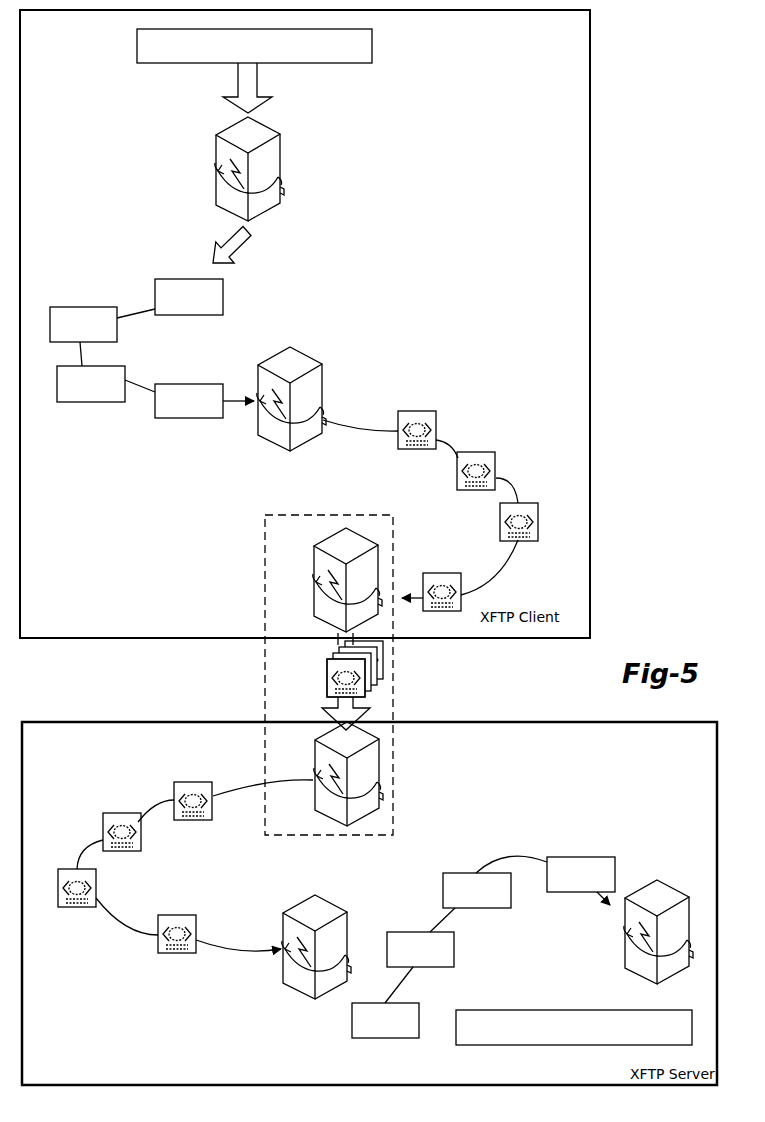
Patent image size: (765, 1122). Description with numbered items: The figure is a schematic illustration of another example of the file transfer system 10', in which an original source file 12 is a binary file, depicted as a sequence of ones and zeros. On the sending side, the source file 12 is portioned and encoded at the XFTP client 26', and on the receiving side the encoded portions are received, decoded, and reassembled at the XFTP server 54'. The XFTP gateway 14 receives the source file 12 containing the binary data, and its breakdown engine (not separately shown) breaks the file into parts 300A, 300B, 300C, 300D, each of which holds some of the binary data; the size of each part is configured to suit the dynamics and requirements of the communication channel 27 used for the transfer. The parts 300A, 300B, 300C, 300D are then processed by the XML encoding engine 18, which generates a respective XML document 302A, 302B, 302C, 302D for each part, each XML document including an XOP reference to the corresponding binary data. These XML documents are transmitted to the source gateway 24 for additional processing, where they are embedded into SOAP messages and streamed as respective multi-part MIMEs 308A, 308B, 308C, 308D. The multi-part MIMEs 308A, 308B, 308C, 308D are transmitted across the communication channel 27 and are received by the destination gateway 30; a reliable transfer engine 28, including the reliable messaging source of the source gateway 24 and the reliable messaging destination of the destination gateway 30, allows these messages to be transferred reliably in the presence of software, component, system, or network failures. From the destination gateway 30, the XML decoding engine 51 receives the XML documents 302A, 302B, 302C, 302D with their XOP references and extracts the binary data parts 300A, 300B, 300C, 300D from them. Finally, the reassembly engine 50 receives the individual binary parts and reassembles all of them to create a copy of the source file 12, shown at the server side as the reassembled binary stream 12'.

The system 10' is at (632, 64).
The source file 12 is at (276, 47).
The reassembled binary data stream 12' is at (574, 1005).
The XFTP gateway 14 is at (280, 135).
The XML encoding engine 18 is at (308, 366).
The source gateway 24 is at (313, 558).
The XFTP client 26' is at (338, 324).
The communication channel 27 is at (349, 678).
The transfer engine 28 is at (265, 595).
The destination gateway 30 is at (313, 800).
The reassembly engine 50 is at (662, 892).
The XML decoding engine 51 is at (327, 910).
The XFTP server 54' is at (369, 884).
The part 300A is at (187, 418).
The part 300B is at (90, 402).
The part 300C is at (102, 307).
The part 300D is at (223, 296).
The XML document 302A is at (445, 573).
The XML document 302B is at (537, 507).
The XML document 302C is at (496, 459).
The XML document 302D is at (436, 414).
The multi-part MIME 308A is at (327, 652).
The multi-part MIME 308B is at (372, 690).
The multi-part MIME 308C is at (378, 670).
The multi-part MIME 308D is at (383, 650).